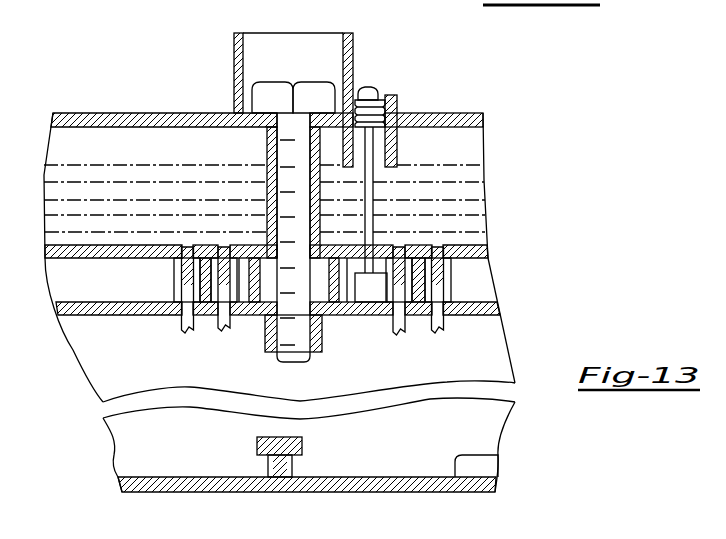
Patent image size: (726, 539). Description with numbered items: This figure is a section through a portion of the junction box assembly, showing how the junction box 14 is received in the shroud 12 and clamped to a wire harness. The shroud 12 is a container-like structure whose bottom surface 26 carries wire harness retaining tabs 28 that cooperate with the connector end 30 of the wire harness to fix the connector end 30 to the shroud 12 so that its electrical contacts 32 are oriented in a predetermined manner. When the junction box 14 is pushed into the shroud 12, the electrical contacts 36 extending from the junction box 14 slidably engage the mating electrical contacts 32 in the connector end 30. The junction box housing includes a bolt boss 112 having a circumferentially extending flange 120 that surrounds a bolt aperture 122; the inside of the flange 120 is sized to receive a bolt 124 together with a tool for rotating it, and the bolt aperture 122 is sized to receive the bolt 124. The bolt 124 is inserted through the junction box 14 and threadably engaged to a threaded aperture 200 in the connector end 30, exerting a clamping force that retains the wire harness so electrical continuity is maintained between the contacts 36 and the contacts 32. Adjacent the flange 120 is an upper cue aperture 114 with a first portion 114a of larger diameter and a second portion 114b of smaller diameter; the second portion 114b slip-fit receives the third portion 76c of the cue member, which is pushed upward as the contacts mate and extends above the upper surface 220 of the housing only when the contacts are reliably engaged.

The shroud 12 is at (158, 493).
The junction box 14 is at (470, 204).
The bottom surface 26 is at (458, 456).
The wire harness retaining tab 28 is at (281, 437).
The connector end 30 is at (485, 359).
The electrical contact 32 is at (177, 293).
The electrical contact 36 is at (188, 268).
The third portion of the cue member 76c is at (392, 63).
The bolt boss 112 is at (235, 83).
The upper cue aperture 114 is at (416, 151).
The first portion of the upper cue aperture 114a is at (384, 135).
The second portion of the upper cue aperture 114b is at (397, 97).
The circumferentially extending flange 120 is at (240, 37).
The bolt aperture 122 is at (272, 147).
The bolt 124 is at (316, 88).
The threaded aperture 200 is at (312, 328).
The upper surface 220 is at (367, 86).